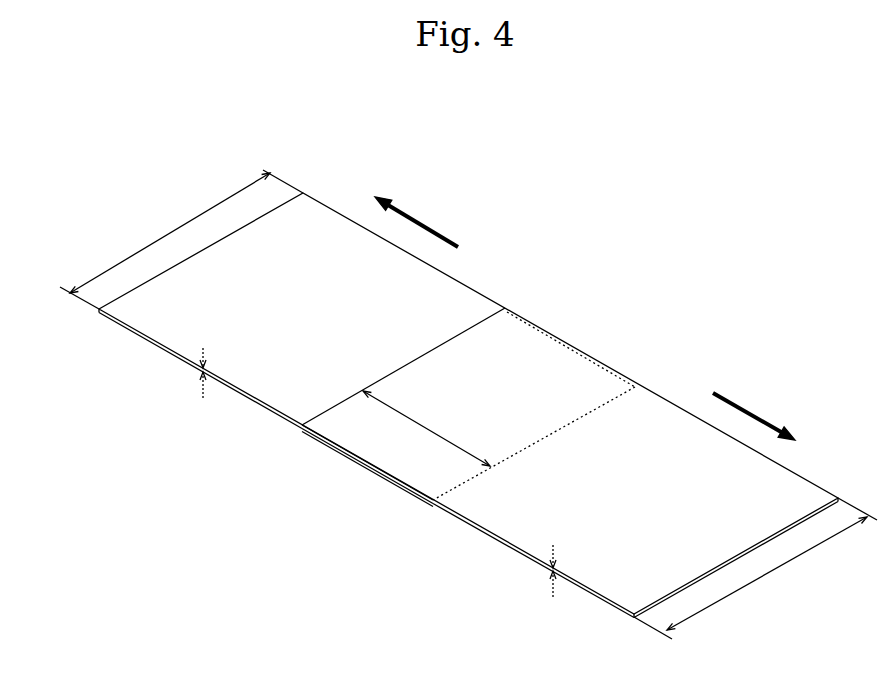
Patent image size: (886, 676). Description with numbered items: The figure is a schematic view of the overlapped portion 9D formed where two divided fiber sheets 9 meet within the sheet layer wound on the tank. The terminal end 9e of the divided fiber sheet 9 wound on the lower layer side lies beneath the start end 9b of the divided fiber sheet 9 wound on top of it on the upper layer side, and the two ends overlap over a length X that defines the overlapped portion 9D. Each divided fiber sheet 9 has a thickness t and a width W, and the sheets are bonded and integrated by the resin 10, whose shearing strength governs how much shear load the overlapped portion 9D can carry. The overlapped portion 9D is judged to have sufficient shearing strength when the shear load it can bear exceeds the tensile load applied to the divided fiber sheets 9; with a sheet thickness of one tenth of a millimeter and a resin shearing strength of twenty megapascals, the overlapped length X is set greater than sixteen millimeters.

The divided fiber sheet 9 is at (330, 208).
The overlapped portion 9D is at (464, 356).
The start end 9b is at (557, 363).
The terminal end 9e is at (388, 482).
The resin 10 is at (337, 453).